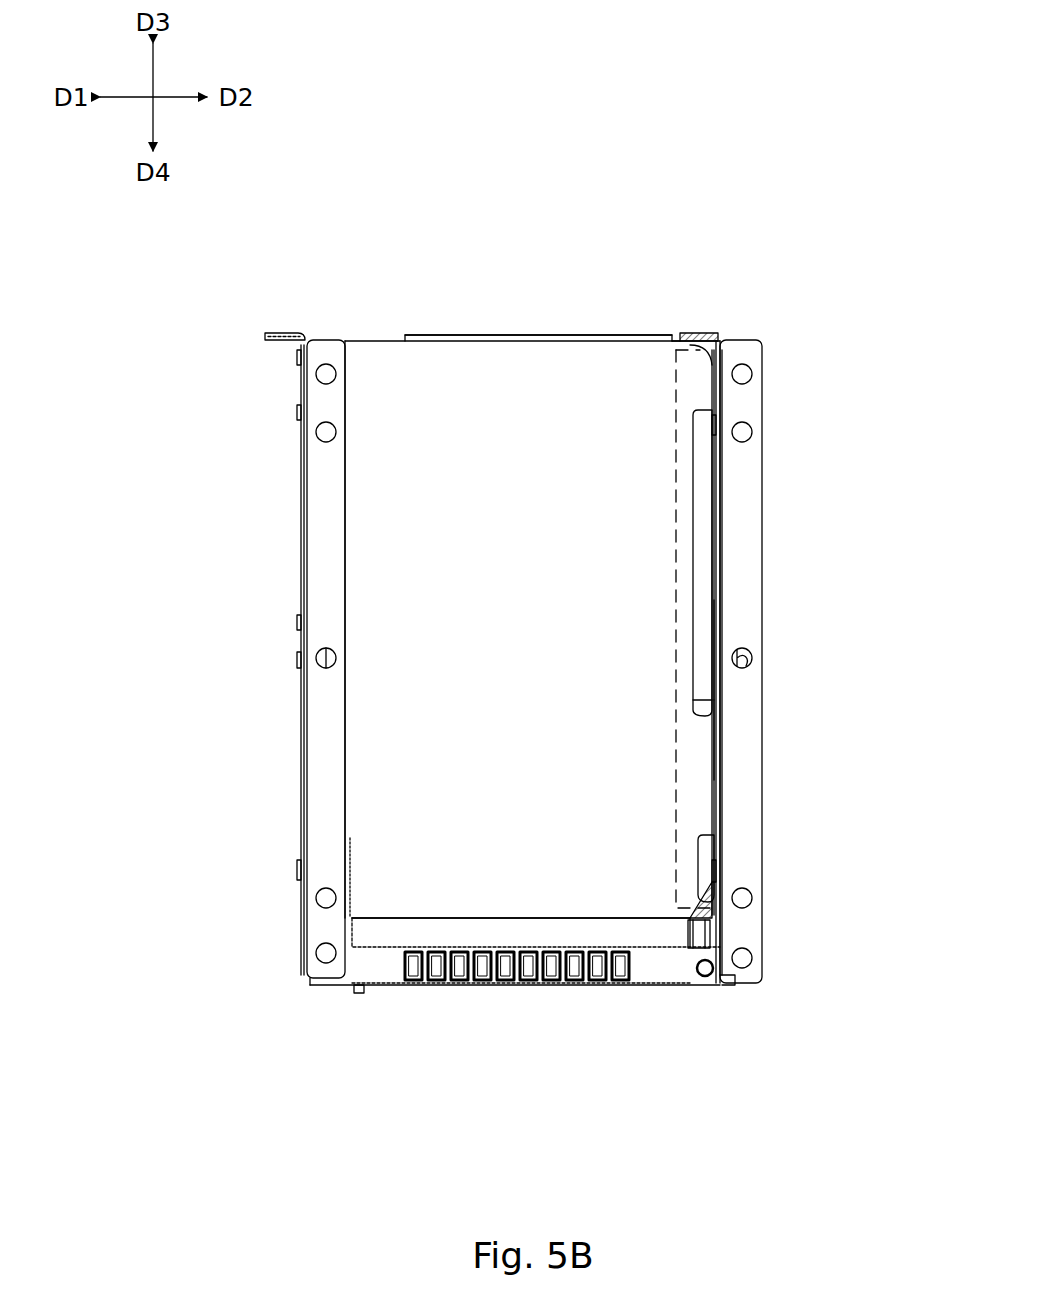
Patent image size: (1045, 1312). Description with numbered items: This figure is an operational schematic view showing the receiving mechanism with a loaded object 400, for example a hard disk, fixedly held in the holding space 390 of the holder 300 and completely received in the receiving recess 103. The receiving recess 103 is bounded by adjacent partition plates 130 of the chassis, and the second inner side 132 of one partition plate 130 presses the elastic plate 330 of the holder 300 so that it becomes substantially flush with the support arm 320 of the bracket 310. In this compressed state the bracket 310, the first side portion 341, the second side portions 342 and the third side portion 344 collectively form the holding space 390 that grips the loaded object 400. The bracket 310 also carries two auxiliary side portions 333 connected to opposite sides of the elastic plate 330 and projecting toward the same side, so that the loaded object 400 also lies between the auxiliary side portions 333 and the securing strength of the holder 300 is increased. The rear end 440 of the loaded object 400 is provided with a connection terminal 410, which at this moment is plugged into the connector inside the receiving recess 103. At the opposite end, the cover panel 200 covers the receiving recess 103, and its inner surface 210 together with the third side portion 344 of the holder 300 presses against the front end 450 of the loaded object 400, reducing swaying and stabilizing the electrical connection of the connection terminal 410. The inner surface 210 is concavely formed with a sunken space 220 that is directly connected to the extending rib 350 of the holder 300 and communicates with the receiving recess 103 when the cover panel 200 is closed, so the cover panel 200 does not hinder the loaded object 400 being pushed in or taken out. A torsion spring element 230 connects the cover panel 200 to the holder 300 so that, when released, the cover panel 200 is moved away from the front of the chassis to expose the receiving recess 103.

The receiving recess 103 is at (350, 336).
The partition plate 130 is at (323, 570).
The second inner side 132 is at (720, 782).
The cover panel 200 is at (372, 986).
The inner surface 210 is at (345, 835).
The sunken space 220 is at (395, 935).
The torsion spring element 230 is at (712, 940).
The holder 300 is at (722, 340).
The bracket 310 is at (843, 620).
The support arm 320 is at (714, 633).
The elastic plate 330 is at (714, 760).
The auxiliary side portion 333 is at (706, 850).
The first side portion 341 is at (700, 333).
The second side portion 342 is at (703, 508).
The third side portion 344 is at (718, 900).
The extending rib 350 is at (705, 916).
The holding space 390 is at (672, 339).
The loaded object 400 is at (510, 378).
The connection terminal 410 is at (590, 336).
The rear end 440 is at (405, 334).
The front end 450 is at (510, 918).